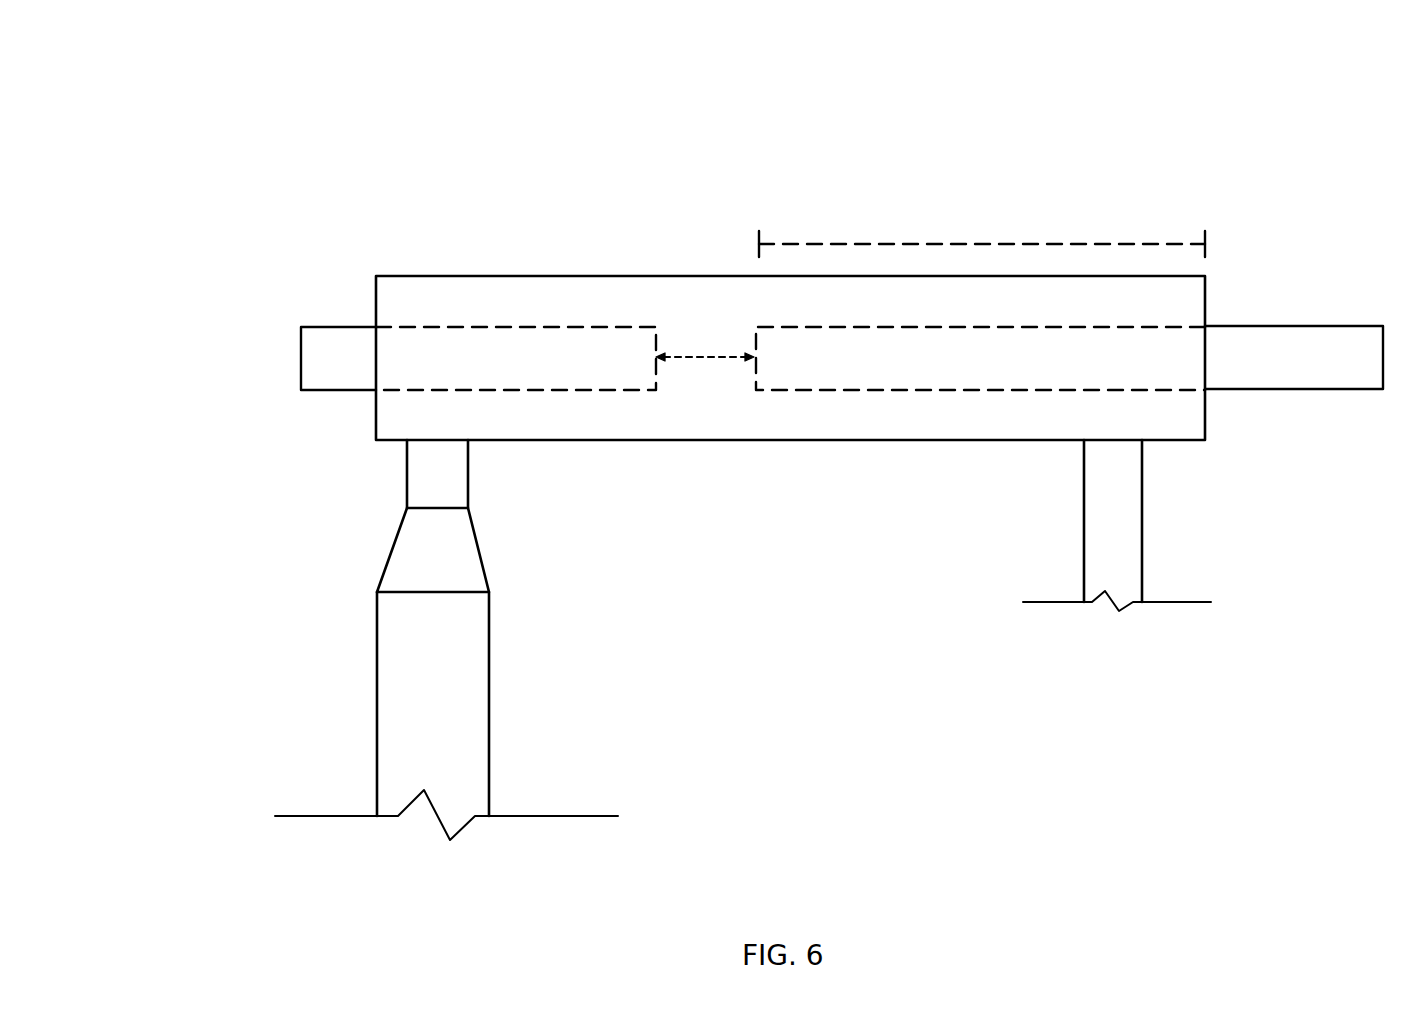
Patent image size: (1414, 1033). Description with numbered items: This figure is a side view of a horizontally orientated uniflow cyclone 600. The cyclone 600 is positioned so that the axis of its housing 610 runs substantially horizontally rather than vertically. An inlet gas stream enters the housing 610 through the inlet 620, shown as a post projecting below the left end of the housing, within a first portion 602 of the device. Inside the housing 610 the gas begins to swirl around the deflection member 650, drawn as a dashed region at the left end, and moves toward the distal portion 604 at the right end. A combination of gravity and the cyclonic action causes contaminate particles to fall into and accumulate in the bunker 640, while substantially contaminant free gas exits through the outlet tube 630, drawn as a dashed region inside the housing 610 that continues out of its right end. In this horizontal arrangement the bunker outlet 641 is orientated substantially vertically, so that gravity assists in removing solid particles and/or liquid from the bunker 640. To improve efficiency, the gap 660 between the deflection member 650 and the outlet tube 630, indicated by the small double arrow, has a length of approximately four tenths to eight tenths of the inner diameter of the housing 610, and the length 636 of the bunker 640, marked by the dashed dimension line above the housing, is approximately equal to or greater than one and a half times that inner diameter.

The cyclone 600 is at (185, 92).
The first portion 602 is at (347, 222).
The distal portion 604 is at (1241, 209).
The housing 610 is at (610, 297).
The inlet 620 is at (433, 472).
The outlet tube 630 is at (1141, 360).
The length of the bunker 636 is at (915, 244).
The bunker 640 is at (1122, 418).
The bunker outlet 641 is at (1105, 449).
The deflection member 650 is at (435, 360).
The gap 660 is at (703, 368).